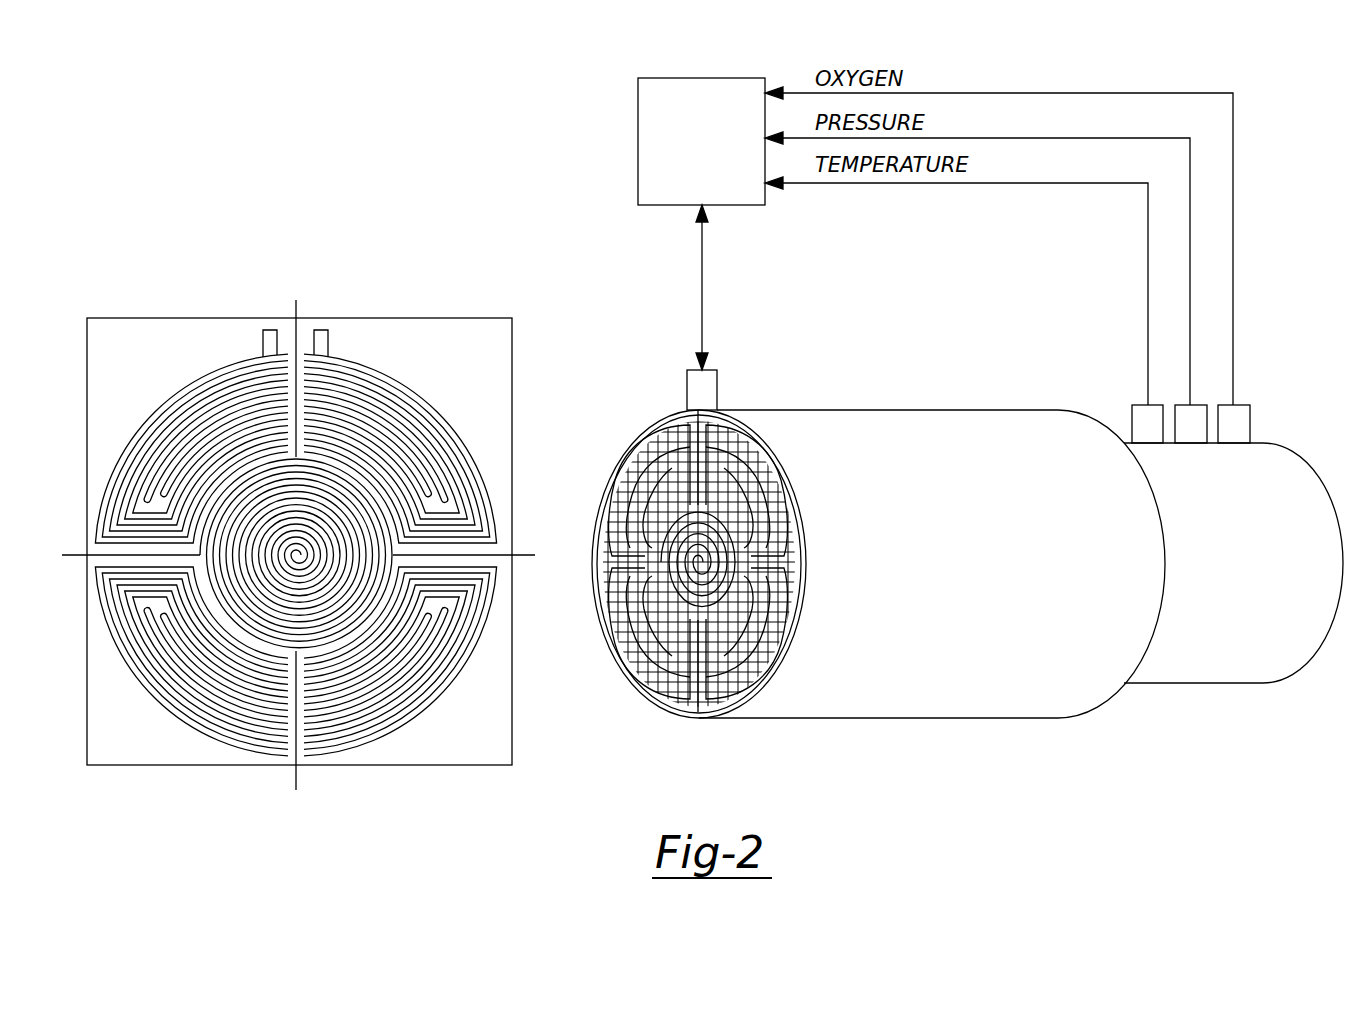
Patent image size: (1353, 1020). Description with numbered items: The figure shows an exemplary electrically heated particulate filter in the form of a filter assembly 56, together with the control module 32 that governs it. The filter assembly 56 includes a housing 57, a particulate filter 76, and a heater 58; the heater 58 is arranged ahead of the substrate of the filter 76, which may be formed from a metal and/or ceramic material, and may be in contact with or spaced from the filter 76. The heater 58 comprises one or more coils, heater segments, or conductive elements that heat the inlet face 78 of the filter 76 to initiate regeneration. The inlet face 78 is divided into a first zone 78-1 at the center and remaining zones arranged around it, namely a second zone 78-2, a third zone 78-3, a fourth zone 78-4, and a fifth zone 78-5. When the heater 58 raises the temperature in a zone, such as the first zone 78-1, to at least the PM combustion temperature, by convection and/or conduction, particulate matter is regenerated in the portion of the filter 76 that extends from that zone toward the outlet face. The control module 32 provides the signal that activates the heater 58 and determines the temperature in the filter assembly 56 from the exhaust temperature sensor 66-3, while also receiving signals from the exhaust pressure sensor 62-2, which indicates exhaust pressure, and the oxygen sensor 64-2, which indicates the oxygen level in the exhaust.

The control module 32 is at (707, 78).
The filter assembly 56 is at (552, 265).
The housing 57 is at (905, 410).
The heater 58 is at (625, 648).
The particulate filter 76 is at (612, 565).
The inlet face 78 is at (170, 278).
The first zone 78-1 is at (312, 520).
The second zone 78-2 is at (453, 428).
The third zone 78-3 is at (465, 675).
The fourth zone 78-4 is at (124, 668).
The fifth zone 78-5 is at (195, 385).
The exhaust temperature sensor 66-3 is at (1131, 408).
The exhaust pressure sensor 62-2 is at (1205, 430).
The oxygen sensor 64-2 is at (1242, 405).